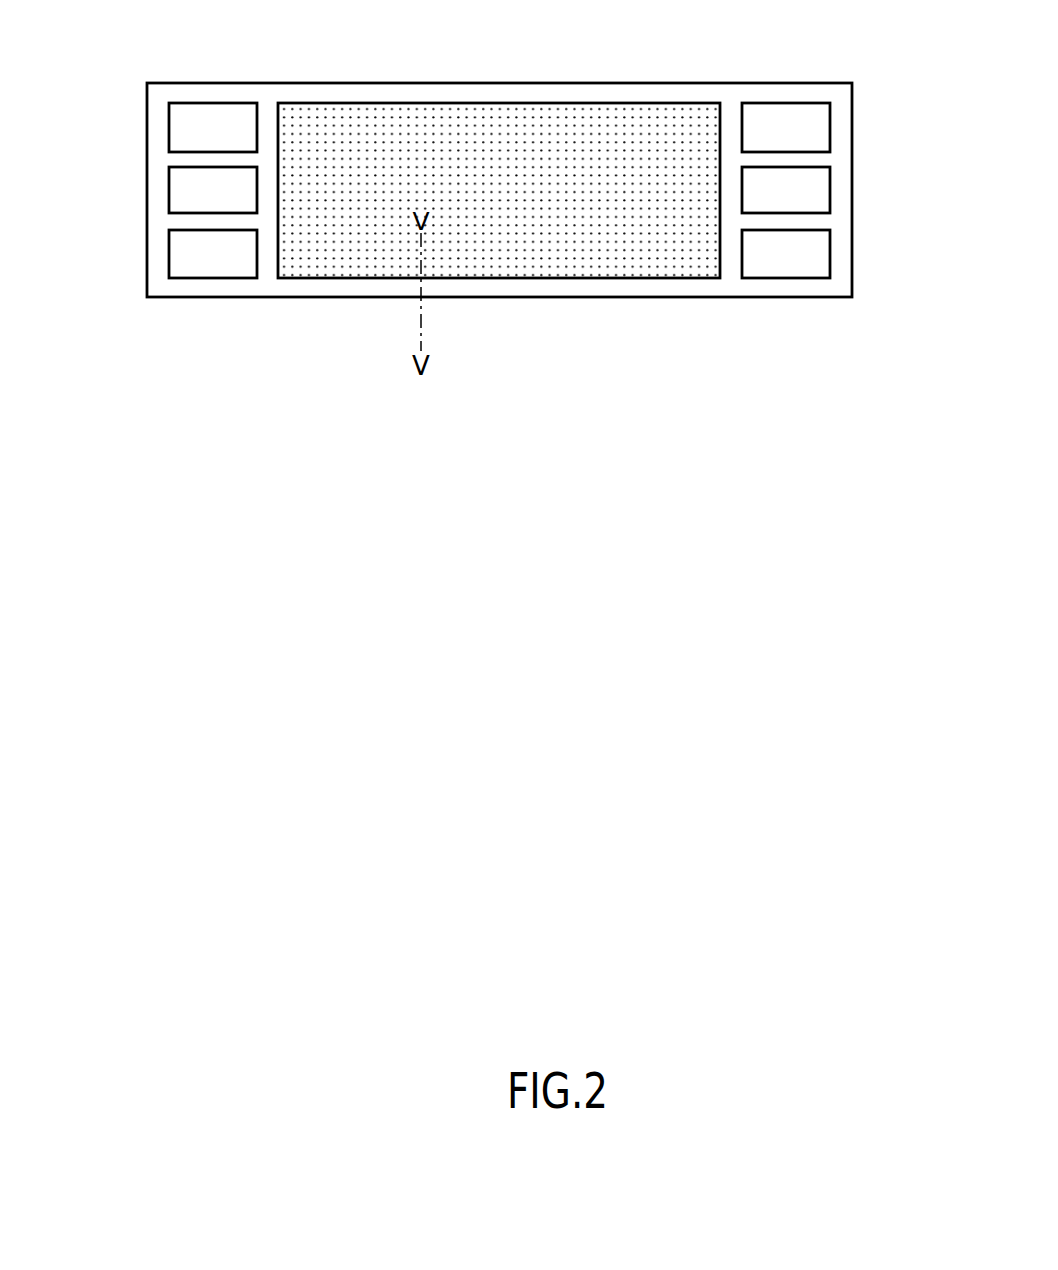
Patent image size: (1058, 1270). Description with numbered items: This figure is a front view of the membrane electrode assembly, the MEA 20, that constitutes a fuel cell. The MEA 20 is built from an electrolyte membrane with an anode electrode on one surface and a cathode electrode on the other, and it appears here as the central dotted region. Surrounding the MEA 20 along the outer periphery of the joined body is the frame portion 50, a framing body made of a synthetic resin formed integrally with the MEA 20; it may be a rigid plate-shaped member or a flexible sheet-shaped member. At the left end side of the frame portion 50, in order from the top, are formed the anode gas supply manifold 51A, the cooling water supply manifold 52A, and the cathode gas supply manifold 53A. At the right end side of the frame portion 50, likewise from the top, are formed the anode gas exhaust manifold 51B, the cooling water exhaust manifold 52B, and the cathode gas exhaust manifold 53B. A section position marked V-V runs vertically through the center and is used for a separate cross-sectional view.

The frame portion 50 is at (283, 91).
The membrane electrode assembly 20 is at (373, 127).
The anode gas supply manifold 51A is at (171, 120).
The cooling water supply manifold 52A is at (171, 184).
The cathode gas supply manifold 53A is at (171, 246).
The anode gas exhaust manifold 51B is at (829, 120).
The cooling water exhaust manifold 52B is at (829, 184).
The cathode gas exhaust manifold 53B is at (829, 246).